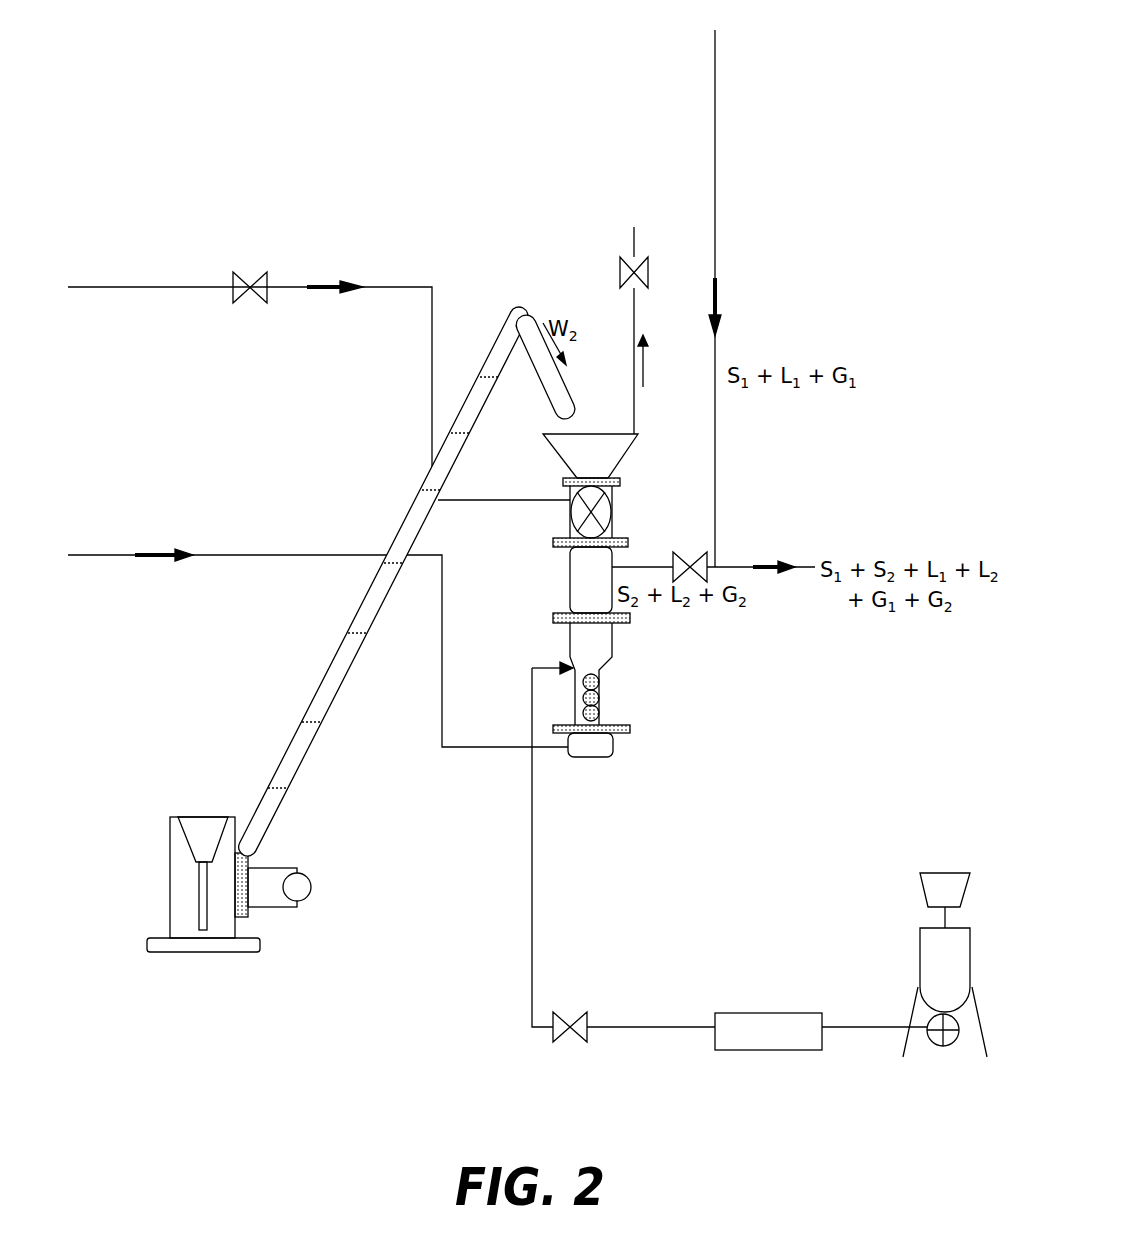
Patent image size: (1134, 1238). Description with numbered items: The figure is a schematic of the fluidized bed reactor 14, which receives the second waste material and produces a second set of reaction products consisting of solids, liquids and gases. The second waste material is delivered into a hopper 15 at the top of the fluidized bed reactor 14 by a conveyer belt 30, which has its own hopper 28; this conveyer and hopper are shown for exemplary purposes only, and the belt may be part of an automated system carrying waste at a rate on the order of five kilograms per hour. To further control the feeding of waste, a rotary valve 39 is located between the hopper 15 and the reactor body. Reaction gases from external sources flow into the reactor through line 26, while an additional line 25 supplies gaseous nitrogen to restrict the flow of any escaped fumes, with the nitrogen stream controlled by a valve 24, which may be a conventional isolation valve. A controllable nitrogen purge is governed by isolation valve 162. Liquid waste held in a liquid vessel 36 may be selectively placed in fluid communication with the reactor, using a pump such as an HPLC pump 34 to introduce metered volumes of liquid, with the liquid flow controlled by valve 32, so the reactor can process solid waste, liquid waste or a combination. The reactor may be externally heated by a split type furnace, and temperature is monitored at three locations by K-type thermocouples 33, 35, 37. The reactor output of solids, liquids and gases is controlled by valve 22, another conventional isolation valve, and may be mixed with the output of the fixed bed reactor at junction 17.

The fluidized bed reactor 14 is at (586, 549).
The hopper 15 is at (623, 462).
The junction 17 is at (732, 551).
The valve 22 is at (706, 575).
The valve 24 is at (267, 279).
The line 25 is at (411, 285).
The line 26 is at (482, 748).
The hopper 28 is at (180, 805).
The conveyer belt 30 is at (327, 673).
The valve 32 is at (576, 1013).
The K-type thermocouple 33 is at (599, 680).
The HPLC analyzer 34 is at (765, 1050).
The K-type thermocouple 35 is at (599, 698).
The liquid vessel 36 is at (920, 958).
The K-type thermocouple 37 is at (599, 713).
The rotary valve 39 is at (577, 522).
The isolation valve 162 is at (621, 264).